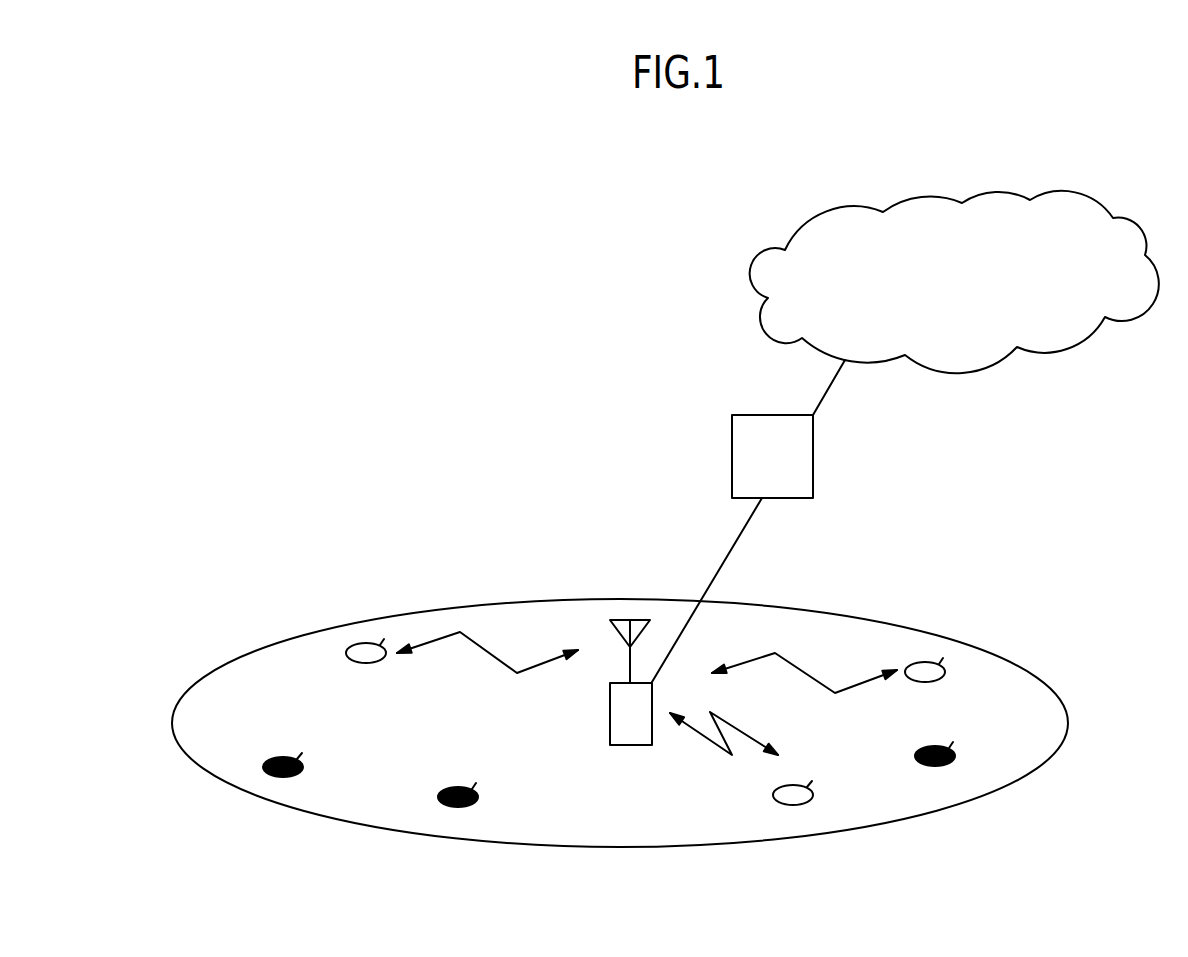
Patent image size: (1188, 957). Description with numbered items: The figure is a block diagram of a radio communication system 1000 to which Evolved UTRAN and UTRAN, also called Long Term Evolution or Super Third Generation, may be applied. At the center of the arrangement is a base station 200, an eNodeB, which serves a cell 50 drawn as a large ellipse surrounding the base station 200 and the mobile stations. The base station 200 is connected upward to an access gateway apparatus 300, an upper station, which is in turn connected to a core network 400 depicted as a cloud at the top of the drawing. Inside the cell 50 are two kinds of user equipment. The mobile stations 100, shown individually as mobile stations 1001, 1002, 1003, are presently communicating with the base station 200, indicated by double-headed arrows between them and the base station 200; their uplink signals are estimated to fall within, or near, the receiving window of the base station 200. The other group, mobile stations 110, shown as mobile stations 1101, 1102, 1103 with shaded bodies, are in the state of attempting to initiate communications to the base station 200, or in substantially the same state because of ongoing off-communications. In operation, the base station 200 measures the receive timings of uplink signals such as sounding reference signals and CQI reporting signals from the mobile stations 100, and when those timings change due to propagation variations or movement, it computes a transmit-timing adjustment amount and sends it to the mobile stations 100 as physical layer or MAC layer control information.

The radio communication system 1000 is at (363, 237).
The core network 400 is at (1003, 190).
The access gateway apparatus 300 is at (813, 455).
The base station 200 is at (610, 722).
The cell 50 is at (903, 820).
The mobile station 100 is at (681, 727).
The mobile station 1001 is at (363, 663).
The mobile station 1002 is at (773, 797).
The mobile station 1003 is at (925, 682).
The mobile station 110 is at (682, 818).
The mobile station 1101 is at (280, 777).
The mobile station 1102 is at (448, 807).
The mobile station 1103 is at (950, 763).